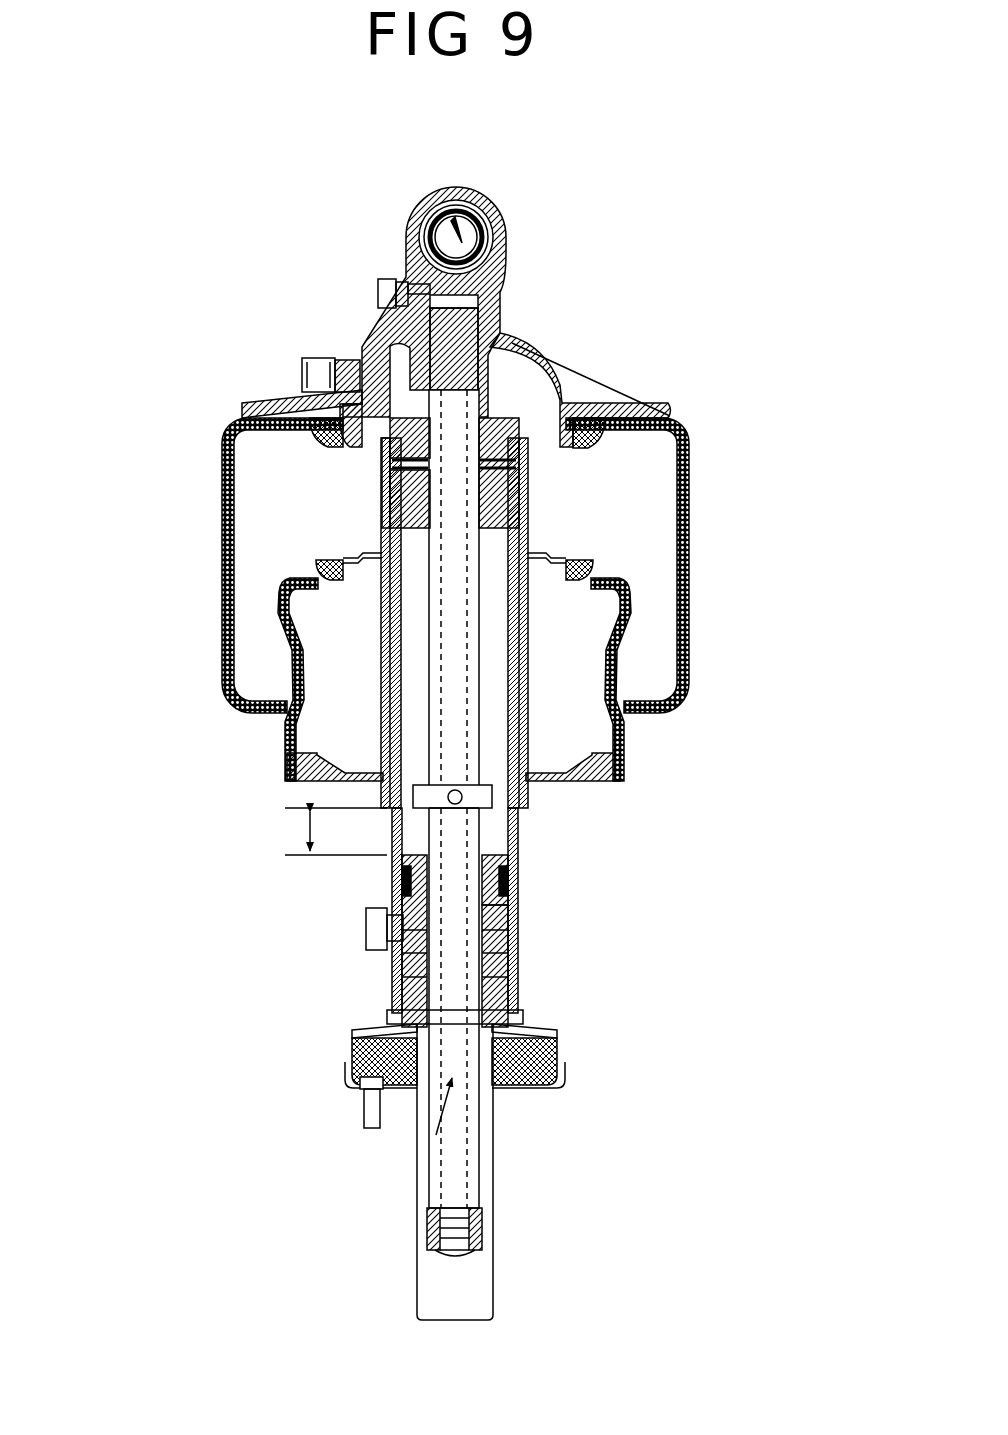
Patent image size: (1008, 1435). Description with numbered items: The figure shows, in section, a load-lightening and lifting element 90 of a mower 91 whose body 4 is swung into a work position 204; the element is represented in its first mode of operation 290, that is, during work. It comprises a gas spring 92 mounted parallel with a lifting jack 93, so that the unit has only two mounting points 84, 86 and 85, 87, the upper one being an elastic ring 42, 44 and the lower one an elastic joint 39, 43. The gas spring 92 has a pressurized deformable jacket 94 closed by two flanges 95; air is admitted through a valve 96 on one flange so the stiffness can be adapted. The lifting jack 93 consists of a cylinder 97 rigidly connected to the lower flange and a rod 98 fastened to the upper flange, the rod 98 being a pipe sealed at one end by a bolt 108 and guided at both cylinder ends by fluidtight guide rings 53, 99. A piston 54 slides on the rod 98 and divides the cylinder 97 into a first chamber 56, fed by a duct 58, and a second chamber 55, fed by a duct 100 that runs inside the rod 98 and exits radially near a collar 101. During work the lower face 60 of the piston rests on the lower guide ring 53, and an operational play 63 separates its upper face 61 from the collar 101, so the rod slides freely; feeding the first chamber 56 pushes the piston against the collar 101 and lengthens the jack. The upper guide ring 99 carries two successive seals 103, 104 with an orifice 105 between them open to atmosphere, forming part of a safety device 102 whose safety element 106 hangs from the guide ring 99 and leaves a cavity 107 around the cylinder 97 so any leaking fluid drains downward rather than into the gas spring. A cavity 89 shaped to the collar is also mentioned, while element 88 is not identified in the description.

The body 4 is at (725, 240).
The mower 91 is at (705, 125).
The work position 204 is at (790, 135).
The first mode of operation 290 is at (130, 240).
The mounting point 84 is at (372, 668).
The mounting point 86 is at (432, 188).
The elastic ring 42 is at (556, 223).
The elastic ring 44 is at (500, 207).
The duct 100 is at (405, 268).
The rod 98 is at (548, 335).
The valve 96 is at (323, 356).
The load-lightening and lifting element 90 is at (243, 404).
The flange 95 is at (567, 357).
The gas spring 92 is at (703, 443).
The deformable jacket 94 is at (690, 505).
The seal 103 is at (380, 457).
The orifice 105 is at (383, 478).
The seal 104 is at (382, 505).
The guide ring 99 is at (380, 523).
The second chamber 55 is at (410, 627).
The cavity 107 is at (528, 668).
The cavity 89 is at (514, 543).
The cylinder 97 is at (526, 612).
The safety element 106 is at (383, 683).
The safety device 102 is at (380, 735).
The collar 101 is at (492, 797).
The rod section 88 is at (500, 810).
The operational play 63 is at (301, 832).
The upper face 61 is at (512, 845).
The piston 54 is at (510, 915).
The lower face 60 is at (510, 932).
The first chamber 56 is at (397, 955).
The duct 58 is at (362, 905).
The guide ring 53 is at (405, 990).
The lifting jack 93 is at (526, 997).
The elastic joint 39 is at (547, 1110).
The elastic joint 43 is at (565, 1088).
The mounting point 85 is at (345, 1172).
The mounting point 87 is at (417, 1147).
The bolt 108 is at (470, 1238).